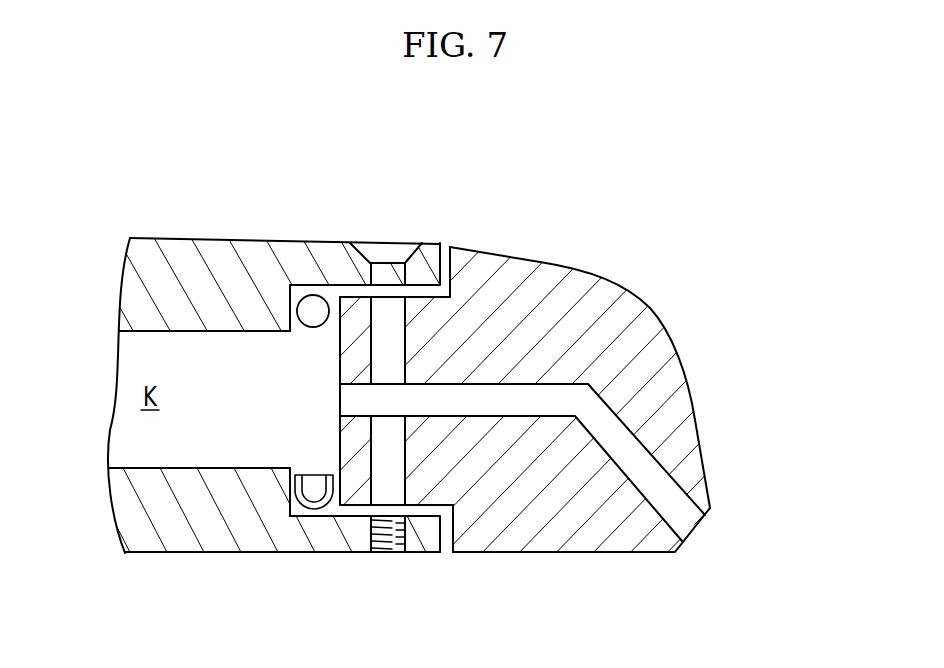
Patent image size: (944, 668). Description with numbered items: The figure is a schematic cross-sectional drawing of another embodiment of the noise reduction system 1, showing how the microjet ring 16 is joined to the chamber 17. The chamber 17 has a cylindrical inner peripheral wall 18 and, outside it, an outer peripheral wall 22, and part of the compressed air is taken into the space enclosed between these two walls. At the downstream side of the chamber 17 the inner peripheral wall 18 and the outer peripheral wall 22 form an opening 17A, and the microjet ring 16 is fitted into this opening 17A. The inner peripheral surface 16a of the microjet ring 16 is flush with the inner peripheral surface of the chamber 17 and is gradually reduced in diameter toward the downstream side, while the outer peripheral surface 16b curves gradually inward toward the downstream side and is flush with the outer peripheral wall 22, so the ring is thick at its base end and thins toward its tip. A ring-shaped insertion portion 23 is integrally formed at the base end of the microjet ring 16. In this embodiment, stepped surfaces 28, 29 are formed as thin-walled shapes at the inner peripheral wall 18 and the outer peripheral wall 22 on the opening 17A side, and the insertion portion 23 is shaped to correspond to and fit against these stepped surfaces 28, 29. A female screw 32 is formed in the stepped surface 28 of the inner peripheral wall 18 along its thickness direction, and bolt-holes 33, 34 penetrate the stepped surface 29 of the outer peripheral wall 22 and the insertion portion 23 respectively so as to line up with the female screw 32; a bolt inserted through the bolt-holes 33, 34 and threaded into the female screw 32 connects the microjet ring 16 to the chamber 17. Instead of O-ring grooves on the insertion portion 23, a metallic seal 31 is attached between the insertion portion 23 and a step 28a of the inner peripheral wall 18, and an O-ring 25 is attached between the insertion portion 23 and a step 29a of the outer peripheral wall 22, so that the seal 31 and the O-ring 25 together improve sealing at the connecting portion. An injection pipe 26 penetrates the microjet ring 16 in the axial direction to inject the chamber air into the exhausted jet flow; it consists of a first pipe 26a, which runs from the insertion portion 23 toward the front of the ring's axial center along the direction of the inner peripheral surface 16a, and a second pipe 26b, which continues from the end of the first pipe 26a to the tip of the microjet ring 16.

The noise reduction system 1 is at (525, 170).
The microjet ring 16 is at (550, 256).
The inner peripheral surface 16a is at (547, 553).
The outer peripheral surface 16b is at (690, 370).
The chamber 17 is at (266, 243).
The opening 17A is at (422, 291).
The inner peripheral wall 18 is at (218, 537).
The outer peripheral wall 22 is at (173, 250).
The insertion portion 23 is at (350, 447).
The O-ring 25 is at (316, 297).
The injection pipe 26 is at (570, 396).
The first pipe 26a is at (525, 384).
The second pipe 26b is at (632, 422).
The stepped surface 28 is at (427, 515).
The step 28a is at (297, 489).
The stepped surface 29 is at (347, 285).
The step 29a is at (292, 325).
The metallic seal 31 is at (313, 507).
The female screw 32 is at (393, 537).
The bolt-hole 33 is at (404, 265).
The bolt-hole 34 is at (405, 350).